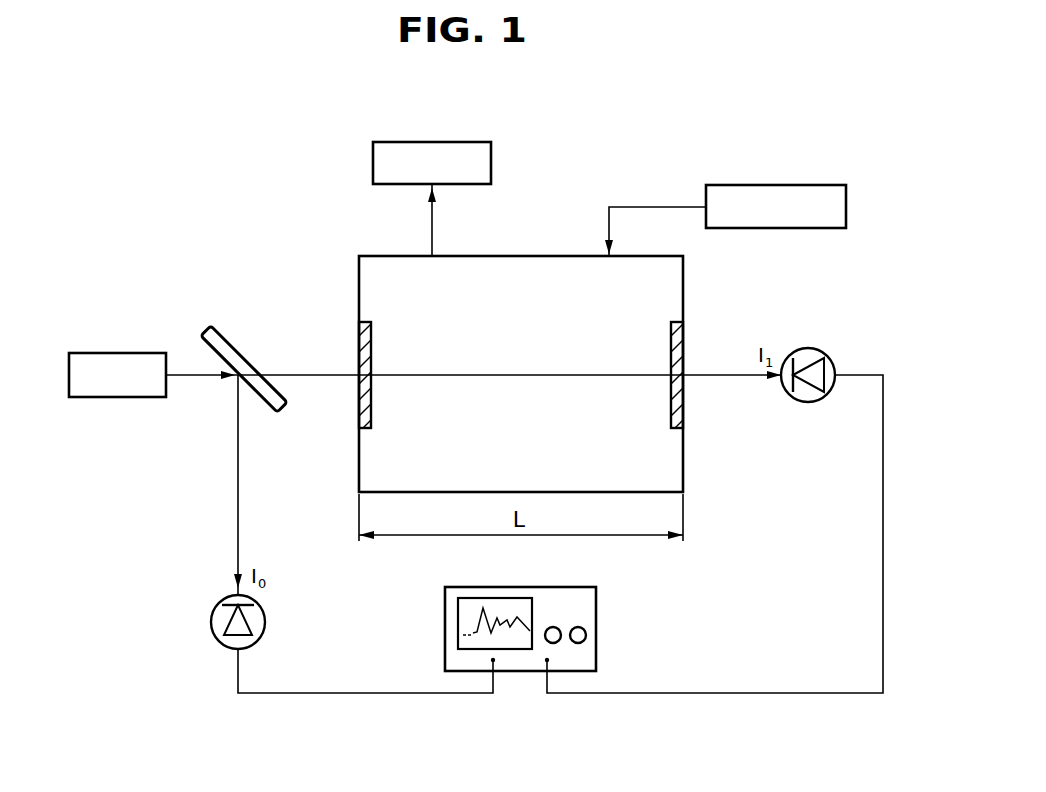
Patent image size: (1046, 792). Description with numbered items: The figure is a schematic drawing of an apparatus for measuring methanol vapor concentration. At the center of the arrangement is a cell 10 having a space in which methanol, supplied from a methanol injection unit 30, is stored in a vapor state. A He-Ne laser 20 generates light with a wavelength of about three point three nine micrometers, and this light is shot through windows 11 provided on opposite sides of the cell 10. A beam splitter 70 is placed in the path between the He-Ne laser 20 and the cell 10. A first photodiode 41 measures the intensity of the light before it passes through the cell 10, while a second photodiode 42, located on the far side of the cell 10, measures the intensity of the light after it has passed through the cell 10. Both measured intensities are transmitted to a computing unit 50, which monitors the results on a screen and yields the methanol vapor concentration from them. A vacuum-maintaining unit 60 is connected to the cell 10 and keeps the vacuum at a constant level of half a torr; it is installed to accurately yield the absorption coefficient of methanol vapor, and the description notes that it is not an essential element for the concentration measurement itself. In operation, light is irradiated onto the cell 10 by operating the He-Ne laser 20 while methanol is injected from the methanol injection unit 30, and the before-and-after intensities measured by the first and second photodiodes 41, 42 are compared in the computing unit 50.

The cell 10 is at (535, 319).
The windows 11 is at (360, 343).
The He-Ne laser 20 is at (116, 352).
The methanol injection unit 30 is at (776, 185).
The first photodiode 41 is at (211, 622).
The second photodiode 42 is at (808, 348).
The computing unit 50 is at (598, 628).
The vacuum-maintaining unit 60 is at (432, 142).
The beam splitter 70 is at (240, 351).